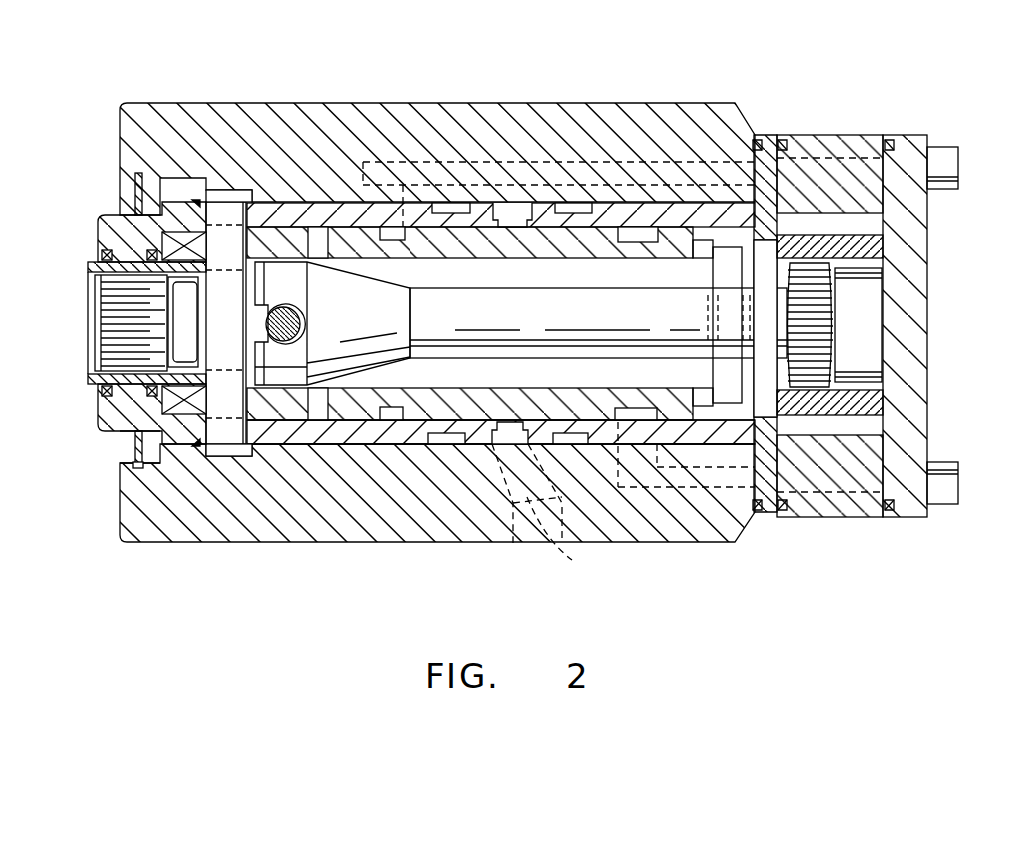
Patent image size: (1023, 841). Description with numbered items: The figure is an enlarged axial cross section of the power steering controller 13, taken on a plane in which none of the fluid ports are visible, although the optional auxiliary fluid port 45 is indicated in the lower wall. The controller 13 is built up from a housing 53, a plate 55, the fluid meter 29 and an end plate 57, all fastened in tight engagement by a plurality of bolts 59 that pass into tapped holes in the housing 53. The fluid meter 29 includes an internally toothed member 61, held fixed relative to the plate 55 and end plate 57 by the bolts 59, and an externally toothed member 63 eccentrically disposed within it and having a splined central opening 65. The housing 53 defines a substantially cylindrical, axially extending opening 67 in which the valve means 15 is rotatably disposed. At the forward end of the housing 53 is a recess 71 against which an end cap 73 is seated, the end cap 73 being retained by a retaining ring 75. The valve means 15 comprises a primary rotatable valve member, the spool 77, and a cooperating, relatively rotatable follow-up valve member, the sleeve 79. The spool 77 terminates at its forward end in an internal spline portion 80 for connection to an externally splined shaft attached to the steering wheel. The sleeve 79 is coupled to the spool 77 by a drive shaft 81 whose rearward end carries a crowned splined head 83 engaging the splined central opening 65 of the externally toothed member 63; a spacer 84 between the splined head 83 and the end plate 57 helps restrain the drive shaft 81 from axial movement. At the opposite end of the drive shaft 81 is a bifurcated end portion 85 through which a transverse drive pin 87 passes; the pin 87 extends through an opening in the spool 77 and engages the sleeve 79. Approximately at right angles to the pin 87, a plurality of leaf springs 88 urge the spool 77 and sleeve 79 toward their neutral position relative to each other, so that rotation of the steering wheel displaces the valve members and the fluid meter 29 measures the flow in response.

The controller 13 is at (99, 101).
The valve means 15 is at (401, 476).
The fluid meter 29 is at (868, 301).
The auxiliary fluid port 45 is at (550, 509).
The housing 53 is at (455, 104).
The plate 55 is at (786, 112).
The end plate 57 is at (910, 135).
The bolts 59 is at (959, 170).
The internally toothed member 61 is at (868, 192).
The externally toothed member 63 is at (868, 246).
The splined central opening 65 is at (872, 388).
The axially extending opening 67 is at (300, 440).
The recess 71 is at (140, 452).
The end cap 73 is at (100, 228).
The retaining ring 75 is at (134, 466).
The spool 77 is at (344, 236).
The sleeve 79 is at (290, 213).
The internal spline portion 80 is at (105, 316).
The drive shaft 81 is at (598, 323).
The crowned splined head 83 is at (822, 312).
The spacer 84 is at (870, 330).
The bifurcated end portion 85 is at (285, 292).
The transverse drive pin 87 is at (292, 325).
The leaf springs 88 is at (224, 220).